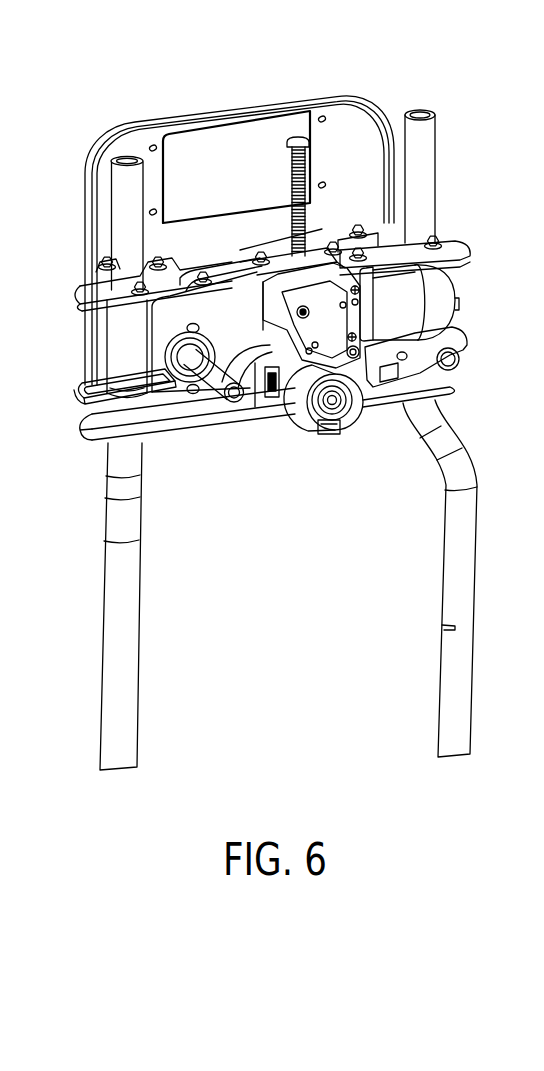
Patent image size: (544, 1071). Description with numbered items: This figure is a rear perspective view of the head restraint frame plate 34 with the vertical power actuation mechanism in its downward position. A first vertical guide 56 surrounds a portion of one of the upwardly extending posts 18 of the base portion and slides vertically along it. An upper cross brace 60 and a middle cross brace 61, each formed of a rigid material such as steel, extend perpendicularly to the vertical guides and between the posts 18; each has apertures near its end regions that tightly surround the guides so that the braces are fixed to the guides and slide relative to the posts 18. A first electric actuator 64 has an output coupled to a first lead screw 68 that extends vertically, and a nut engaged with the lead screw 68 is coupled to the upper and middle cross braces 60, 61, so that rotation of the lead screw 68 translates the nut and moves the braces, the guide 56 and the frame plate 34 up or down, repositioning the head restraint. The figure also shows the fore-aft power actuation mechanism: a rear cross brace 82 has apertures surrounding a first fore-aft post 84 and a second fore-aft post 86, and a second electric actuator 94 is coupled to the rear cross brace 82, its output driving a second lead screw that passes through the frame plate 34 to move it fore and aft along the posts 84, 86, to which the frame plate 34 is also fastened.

The upwardly extending posts 18 is at (120, 598).
The frame plate 34 is at (174, 118).
The first vertical guide 56 is at (118, 353).
The upper cross brace 60 is at (90, 302).
The middle cross brace 61 is at (102, 408).
The first electric actuator 64 is at (297, 400).
The first lead screw 68 is at (308, 152).
The rear cross brace 82 is at (168, 393).
The first fore-aft post 84 is at (212, 395).
The second fore-aft post 86 is at (437, 347).
The second electric actuator 94 is at (430, 298).